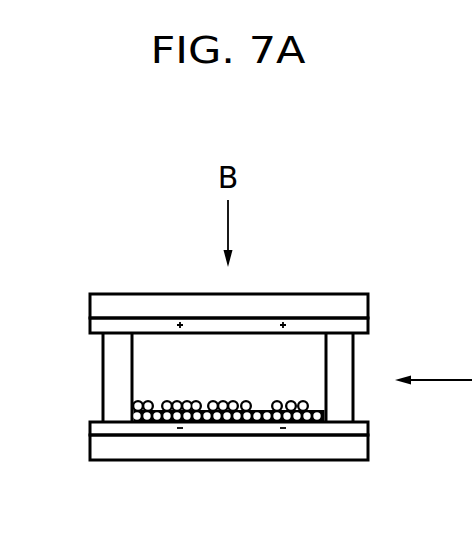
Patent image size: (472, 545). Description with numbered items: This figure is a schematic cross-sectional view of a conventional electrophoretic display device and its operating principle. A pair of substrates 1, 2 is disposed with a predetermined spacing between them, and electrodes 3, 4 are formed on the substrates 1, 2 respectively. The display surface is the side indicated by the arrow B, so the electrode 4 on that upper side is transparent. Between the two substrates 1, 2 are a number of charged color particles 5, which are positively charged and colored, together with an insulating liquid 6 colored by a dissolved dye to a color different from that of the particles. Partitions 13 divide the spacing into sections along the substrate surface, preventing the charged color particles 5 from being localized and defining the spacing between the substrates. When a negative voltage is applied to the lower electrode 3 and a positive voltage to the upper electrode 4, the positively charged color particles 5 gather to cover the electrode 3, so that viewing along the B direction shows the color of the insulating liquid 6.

The substrate 1 is at (342, 450).
The substrate 2 is at (92, 303).
The electrode 3 is at (367, 428).
The electrode 4 is at (92, 325).
The charged color particles 5 is at (243, 415).
The insulating liquid 6 is at (303, 377).
The partitions 13 is at (110, 397).